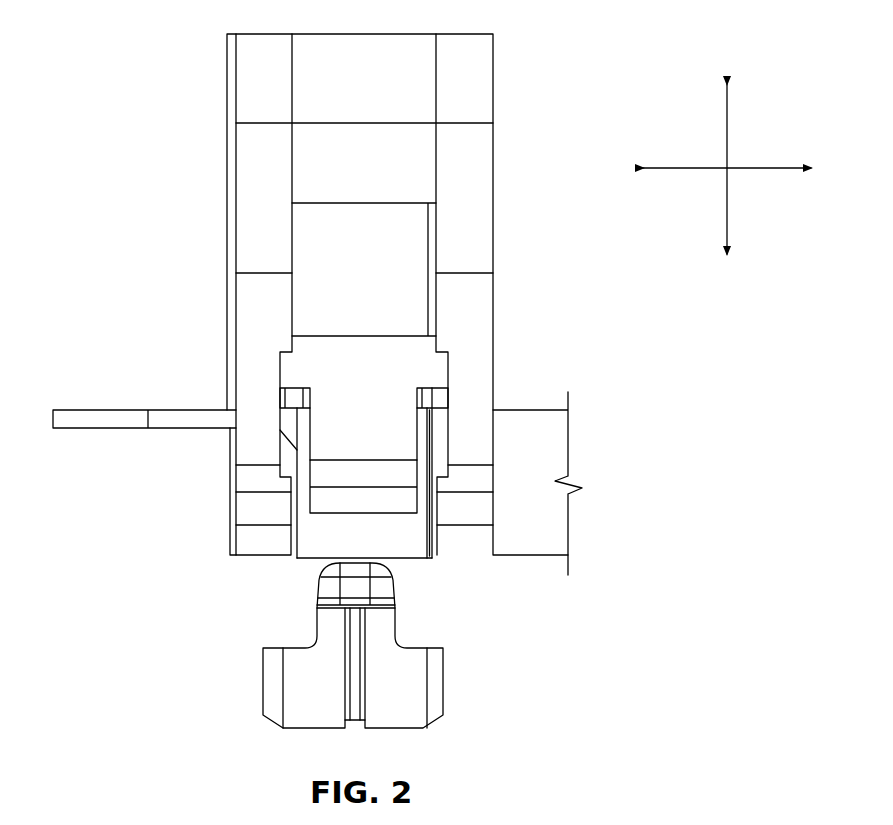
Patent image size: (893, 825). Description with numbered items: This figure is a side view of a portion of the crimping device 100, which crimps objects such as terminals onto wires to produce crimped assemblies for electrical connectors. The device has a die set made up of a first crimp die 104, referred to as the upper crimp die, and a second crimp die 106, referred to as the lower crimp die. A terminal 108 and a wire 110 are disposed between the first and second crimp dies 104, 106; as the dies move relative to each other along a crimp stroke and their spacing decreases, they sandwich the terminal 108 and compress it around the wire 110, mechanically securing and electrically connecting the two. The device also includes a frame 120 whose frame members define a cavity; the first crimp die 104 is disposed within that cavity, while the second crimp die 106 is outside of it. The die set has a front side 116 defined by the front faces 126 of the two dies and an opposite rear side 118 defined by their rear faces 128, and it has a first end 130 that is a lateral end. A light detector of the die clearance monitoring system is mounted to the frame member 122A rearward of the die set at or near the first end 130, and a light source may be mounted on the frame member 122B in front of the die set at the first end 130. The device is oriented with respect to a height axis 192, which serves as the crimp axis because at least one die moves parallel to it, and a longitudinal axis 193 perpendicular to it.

The crimping device 100 is at (537, 118).
The first crimp die 104 is at (323, 372).
The second crimp die 106 is at (300, 673).
The terminal 108 is at (98, 420).
The wire 110 is at (540, 447).
The front side 116 is at (250, 617).
The rear side 118 is at (470, 630).
The frame 120 is at (252, 180).
The frame member 122A is at (472, 525).
The frame member 122B is at (255, 505).
The front faces 126 is at (310, 447).
The rear faces 128 is at (420, 432).
The first end 130 is at (378, 410).
The height axis 192 is at (728, 100).
The longitudinal axis 193 is at (777, 167).